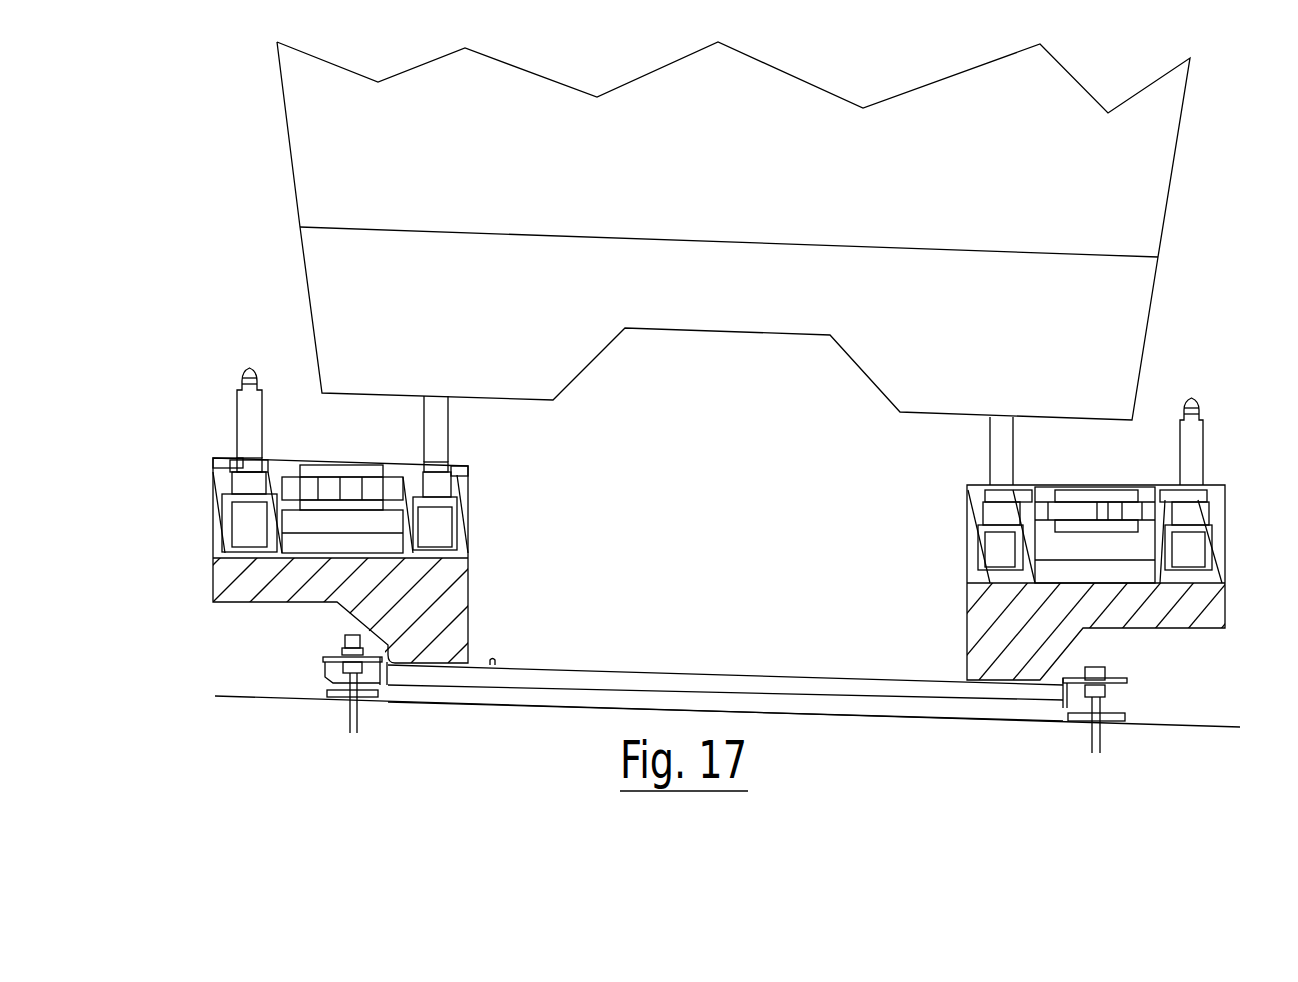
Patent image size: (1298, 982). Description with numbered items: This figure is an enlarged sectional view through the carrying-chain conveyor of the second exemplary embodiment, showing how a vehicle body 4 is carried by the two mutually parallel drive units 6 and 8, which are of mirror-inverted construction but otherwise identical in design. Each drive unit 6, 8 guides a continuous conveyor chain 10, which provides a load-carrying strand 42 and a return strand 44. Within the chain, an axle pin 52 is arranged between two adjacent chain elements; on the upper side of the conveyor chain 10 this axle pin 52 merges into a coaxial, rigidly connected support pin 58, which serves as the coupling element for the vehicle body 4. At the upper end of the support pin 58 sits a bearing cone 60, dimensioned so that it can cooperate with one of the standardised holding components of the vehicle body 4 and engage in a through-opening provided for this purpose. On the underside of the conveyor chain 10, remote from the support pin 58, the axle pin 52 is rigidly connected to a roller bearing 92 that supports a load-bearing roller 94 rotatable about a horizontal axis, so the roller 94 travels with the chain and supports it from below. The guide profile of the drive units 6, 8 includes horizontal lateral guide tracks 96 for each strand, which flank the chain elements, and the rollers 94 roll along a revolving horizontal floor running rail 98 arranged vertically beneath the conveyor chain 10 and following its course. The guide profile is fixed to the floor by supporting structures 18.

The vehicle body 4 is at (1143, 180).
The drive unit 6 is at (1233, 314).
The drive unit 8 is at (185, 205).
The conveyor chain 10 is at (270, 450).
The supporting structure 18 is at (549, 690).
The load-carrying strand 42 is at (432, 462).
The return strand 44 is at (248, 472).
The axle pin 52 is at (230, 470).
The support pin 58 is at (232, 412).
The bearing cone 60 is at (241, 378).
The roller bearing 92 is at (230, 513).
The load-bearing roller 94 is at (240, 565).
The lateral guide track 96 is at (233, 490).
The floor running rail 98 is at (258, 553).